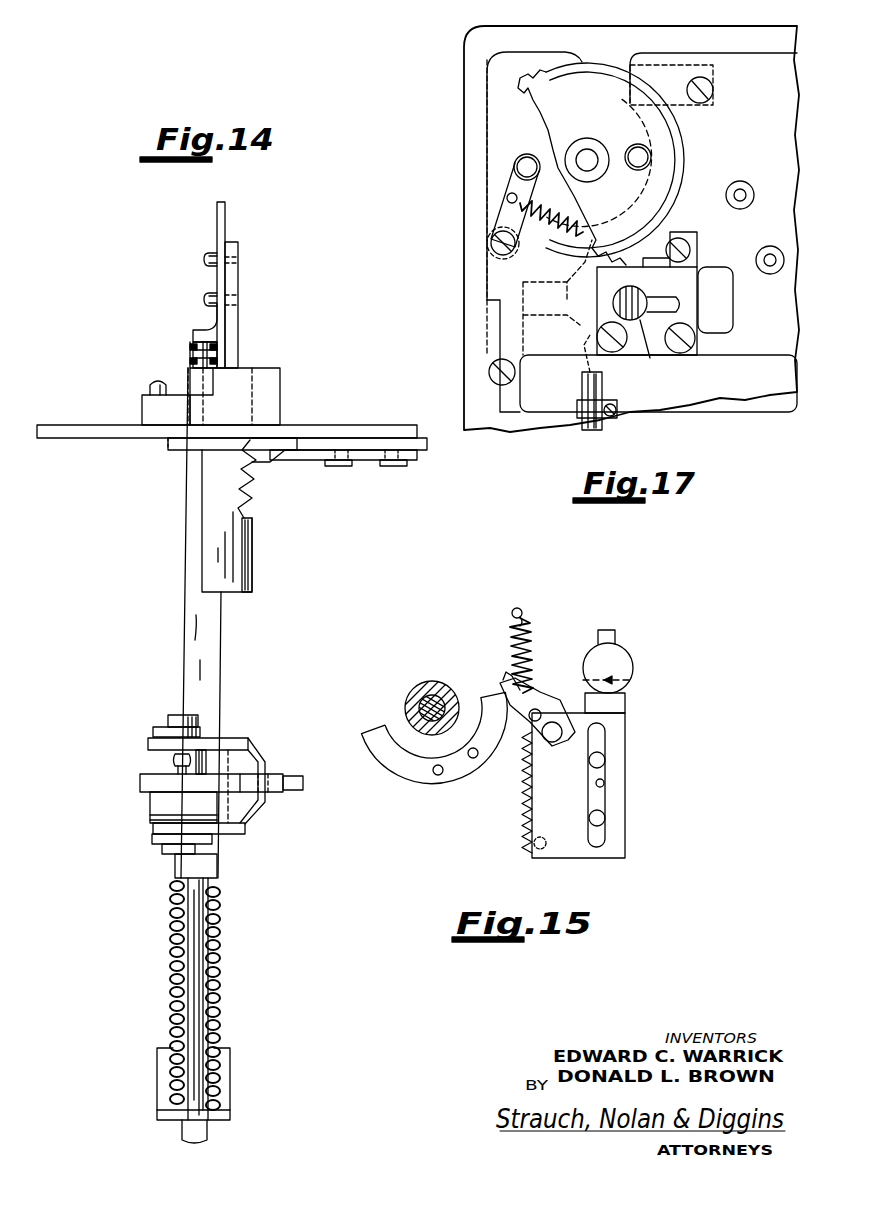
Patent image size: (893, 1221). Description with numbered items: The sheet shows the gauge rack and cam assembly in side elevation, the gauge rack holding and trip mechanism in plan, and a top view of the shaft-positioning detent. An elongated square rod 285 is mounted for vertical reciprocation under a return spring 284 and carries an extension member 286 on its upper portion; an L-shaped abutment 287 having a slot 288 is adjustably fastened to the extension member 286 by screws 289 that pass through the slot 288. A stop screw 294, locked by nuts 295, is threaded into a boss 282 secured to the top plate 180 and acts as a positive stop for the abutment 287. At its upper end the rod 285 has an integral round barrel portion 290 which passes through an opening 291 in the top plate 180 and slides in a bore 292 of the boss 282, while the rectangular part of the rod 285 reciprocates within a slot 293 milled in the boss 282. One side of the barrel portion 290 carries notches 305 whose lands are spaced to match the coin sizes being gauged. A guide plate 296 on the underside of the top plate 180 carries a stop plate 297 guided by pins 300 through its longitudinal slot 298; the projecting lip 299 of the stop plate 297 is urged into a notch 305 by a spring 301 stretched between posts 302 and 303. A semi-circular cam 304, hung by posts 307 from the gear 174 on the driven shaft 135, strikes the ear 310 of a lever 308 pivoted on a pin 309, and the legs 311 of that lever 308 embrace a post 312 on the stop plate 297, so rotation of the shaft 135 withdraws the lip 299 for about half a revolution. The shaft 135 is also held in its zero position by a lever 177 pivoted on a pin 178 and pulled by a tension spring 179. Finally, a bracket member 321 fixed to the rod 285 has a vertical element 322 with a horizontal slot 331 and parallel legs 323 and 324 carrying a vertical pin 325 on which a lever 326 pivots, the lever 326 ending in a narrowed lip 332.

In FIG. 17, the driven shaft 135 is at (587, 150).
In FIG. 15, the driven shaft 135 is at (418, 702).
In FIG. 17, the gear 174 is at (540, 80).
In FIG. 15, the gear 174 is at (432, 684).
In FIG. 17, the lever 177 is at (514, 170).
In FIG. 17, the pin 178 is at (516, 246).
In FIG. 17, the tension spring 179 is at (545, 208).
In FIG. 14, the top plate 180 is at (78, 425).
In FIG. 14, the boss 282 is at (272, 398).
In FIG. 17, the boss 282 is at (688, 232).
In FIG. 14, the return spring 284 is at (222, 922).
In FIG. 14, the square rod 285 is at (226, 666).
In FIG. 17, the square rod 285 is at (650, 292).
In FIG. 15, the square rod 285 is at (616, 638).
In FIG. 14, the extension member 286 is at (228, 332).
In FIG. 14, the L-shaped abutment 287 is at (217, 210).
In FIG. 14, the slot 288 is at (231, 224).
In FIG. 14, the screws 289 is at (208, 300).
In FIG. 14, the barrel portion 290 is at (244, 554).
In FIG. 15, the barrel portion 290 is at (592, 660).
In FIG. 14, the opening 291 is at (176, 438).
In FIG. 14, the bore 292 is at (252, 368).
In FIG. 17, the bore 292 is at (646, 366).
In FIG. 14, the slot 293 is at (166, 409).
In FIG. 17, the slot 293 is at (670, 297).
In FIG. 14, the stop screw 294 is at (192, 350).
In FIG. 14, the nuts 295 is at (188, 366).
In FIG. 14, the guide plate 296 is at (428, 445).
In FIG. 14, the stop plate 297 is at (420, 458).
In FIG. 15, the stop plate 297 is at (615, 850).
In FIG. 14, the slot 298 is at (305, 462).
In FIG. 15, the slot 298 is at (606, 782).
In FIG. 14, the projecting lip 299 is at (285, 460).
In FIG. 15, the projecting lip 299 is at (615, 705).
In FIG. 14, the guide pins 300 is at (348, 464).
In FIG. 15, the guide pins 300 is at (590, 764).
In FIG. 15, the spring 301 is at (512, 656).
In FIG. 15, the post 302 is at (521, 612).
In FIG. 15, the post 303 is at (534, 844).
In FIG. 15, the semi-circular cam 304 is at (414, 776).
In FIG. 14, the notches 305 is at (252, 498).
In FIG. 15, the notches 305 is at (622, 684).
In FIG. 15, the posts 307 is at (474, 758).
In FIG. 15, the lever 308 is at (520, 738).
In FIG. 15, the pin 309 is at (545, 694).
In FIG. 15, the ear 310 is at (506, 678).
In FIG. 15, the legs 311 is at (560, 738).
In FIG. 15, the post 312 is at (540, 710).
In FIG. 14, the bracket member 321 is at (250, 824).
In FIG. 14, the vertical element 322 is at (268, 772).
In FIG. 14, the horizontal leg 323 is at (148, 748).
In FIG. 14, the horizontal leg 324 is at (162, 831).
In FIG. 14, the vertical pin 325 is at (178, 716).
In FIG. 14, the lever 326 is at (268, 792).
In FIG. 14, the horizontal slot 331 is at (250, 737).
In FIG. 14, the lip 332 is at (182, 792).